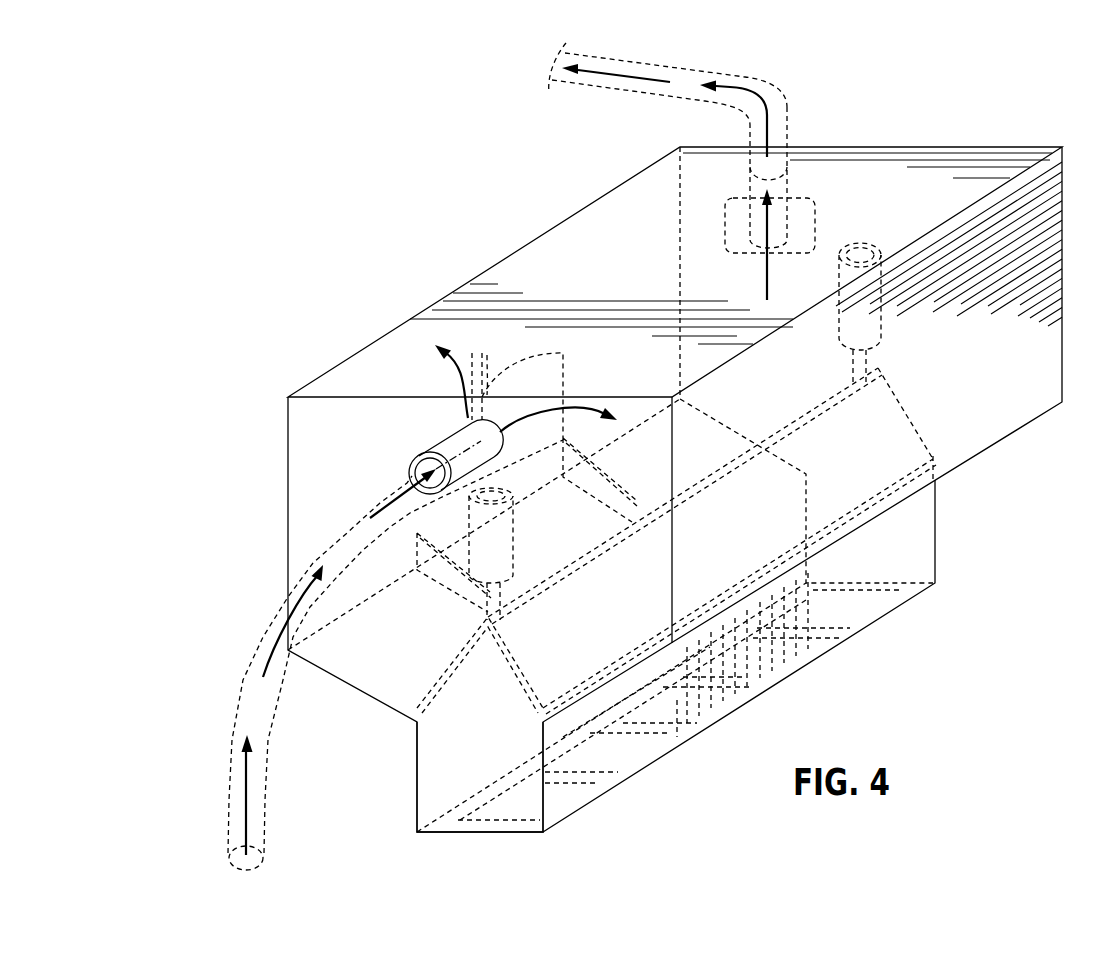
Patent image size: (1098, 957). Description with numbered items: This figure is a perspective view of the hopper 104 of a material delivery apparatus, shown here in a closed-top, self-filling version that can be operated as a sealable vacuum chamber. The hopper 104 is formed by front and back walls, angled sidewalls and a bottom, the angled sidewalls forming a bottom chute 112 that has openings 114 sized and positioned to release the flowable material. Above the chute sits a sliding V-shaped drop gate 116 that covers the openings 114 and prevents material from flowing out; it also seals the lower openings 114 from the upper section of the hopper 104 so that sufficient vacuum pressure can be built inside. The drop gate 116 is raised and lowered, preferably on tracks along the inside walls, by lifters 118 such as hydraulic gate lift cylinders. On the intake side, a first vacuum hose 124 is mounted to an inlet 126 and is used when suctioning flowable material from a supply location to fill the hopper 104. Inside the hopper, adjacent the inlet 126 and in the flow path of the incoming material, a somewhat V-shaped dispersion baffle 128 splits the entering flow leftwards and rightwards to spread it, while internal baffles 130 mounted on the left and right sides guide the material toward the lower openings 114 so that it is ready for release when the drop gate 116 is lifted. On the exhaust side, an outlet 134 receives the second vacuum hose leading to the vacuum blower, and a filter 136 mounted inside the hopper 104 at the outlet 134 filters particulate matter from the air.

The hopper 104 is at (1026, 135).
The bottom chute 112 is at (925, 548).
The openings 114 is at (483, 834).
The drop gate 116 is at (570, 655).
The lifters 118 is at (513, 520).
The first vacuum hose 124 is at (237, 737).
The inlet 126 is at (447, 443).
The dispersion baffle 128 is at (560, 377).
The internal baffles 130 is at (445, 585).
The outlet 134 is at (782, 112).
The filter 136 is at (813, 205).